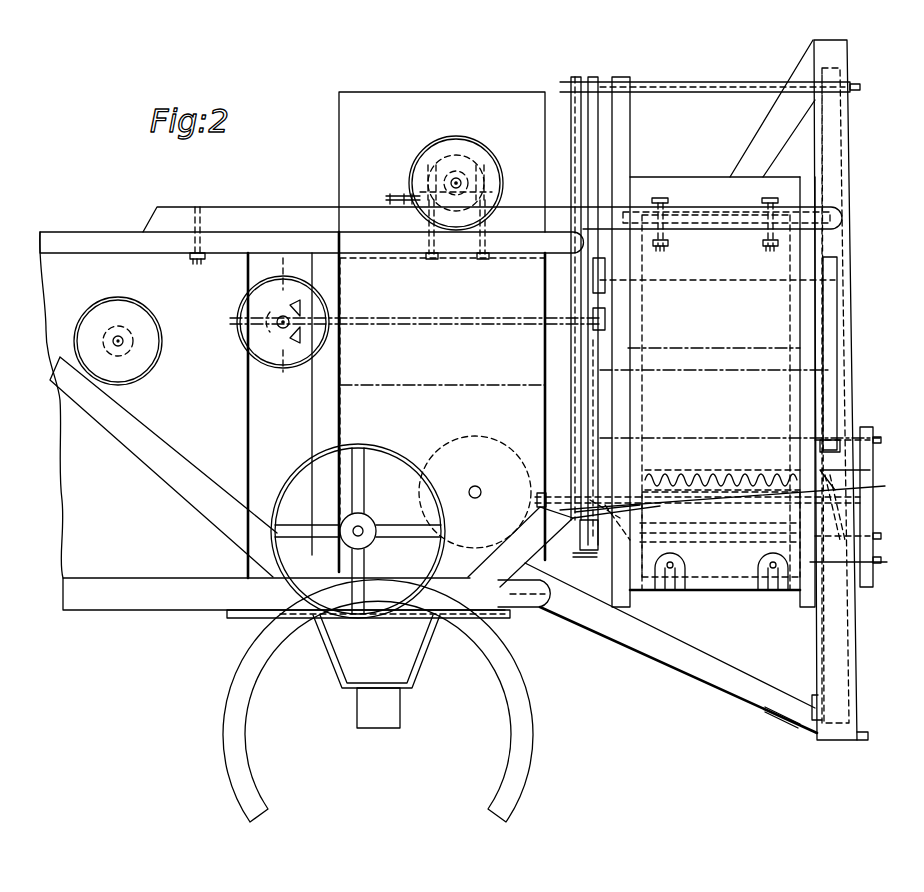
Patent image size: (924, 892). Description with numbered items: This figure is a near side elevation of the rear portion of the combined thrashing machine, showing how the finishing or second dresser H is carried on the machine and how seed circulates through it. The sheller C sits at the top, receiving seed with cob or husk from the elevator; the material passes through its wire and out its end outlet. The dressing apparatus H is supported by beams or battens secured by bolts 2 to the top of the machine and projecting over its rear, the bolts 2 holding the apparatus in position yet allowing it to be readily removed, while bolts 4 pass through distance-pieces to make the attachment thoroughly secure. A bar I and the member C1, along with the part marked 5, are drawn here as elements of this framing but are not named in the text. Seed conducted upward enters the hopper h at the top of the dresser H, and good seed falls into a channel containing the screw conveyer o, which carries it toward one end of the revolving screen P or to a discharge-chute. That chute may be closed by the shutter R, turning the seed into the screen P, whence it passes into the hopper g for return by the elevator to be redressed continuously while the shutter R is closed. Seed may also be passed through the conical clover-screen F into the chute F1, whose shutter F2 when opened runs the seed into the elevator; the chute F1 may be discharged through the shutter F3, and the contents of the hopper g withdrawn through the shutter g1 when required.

The bolts 2 is at (200, 206).
The bar I is at (272, 188).
The sheller C is at (463, 166).
The guide bar C1 is at (840, 308).
The hopper h is at (664, 186).
The finishing or second dresser H is at (740, 342).
The screw conveyer o is at (744, 478).
The shutter R is at (684, 531).
The bolts 4 is at (536, 500).
The link 5 is at (619, 507).
The revolving screen P is at (590, 568).
The conical clover-screen F is at (475, 492).
The chute F1 is at (702, 657).
The shutter F2 is at (810, 698).
The shutter F3 is at (785, 725).
The hopper g is at (868, 614).
The shutter g1 is at (860, 733).